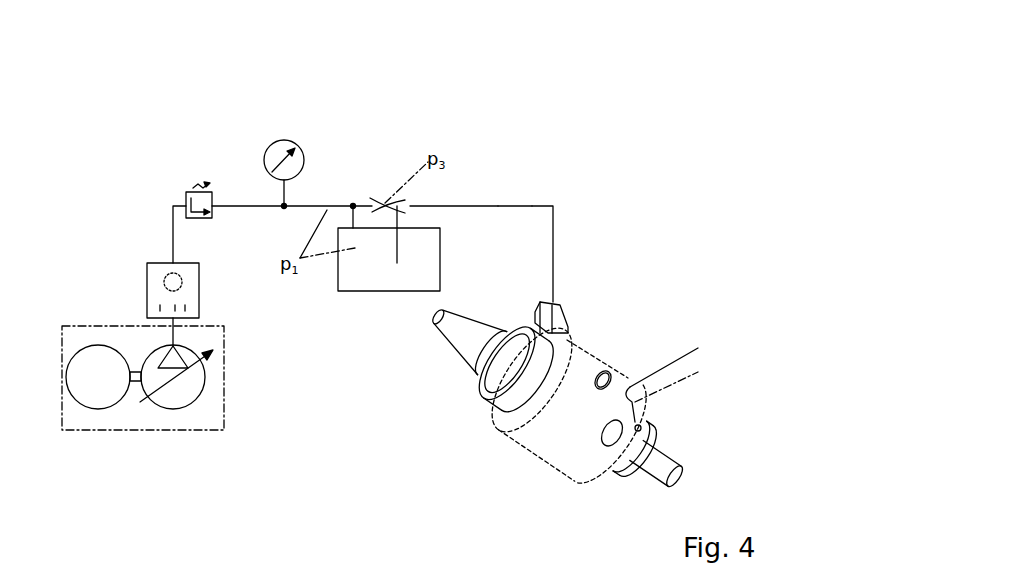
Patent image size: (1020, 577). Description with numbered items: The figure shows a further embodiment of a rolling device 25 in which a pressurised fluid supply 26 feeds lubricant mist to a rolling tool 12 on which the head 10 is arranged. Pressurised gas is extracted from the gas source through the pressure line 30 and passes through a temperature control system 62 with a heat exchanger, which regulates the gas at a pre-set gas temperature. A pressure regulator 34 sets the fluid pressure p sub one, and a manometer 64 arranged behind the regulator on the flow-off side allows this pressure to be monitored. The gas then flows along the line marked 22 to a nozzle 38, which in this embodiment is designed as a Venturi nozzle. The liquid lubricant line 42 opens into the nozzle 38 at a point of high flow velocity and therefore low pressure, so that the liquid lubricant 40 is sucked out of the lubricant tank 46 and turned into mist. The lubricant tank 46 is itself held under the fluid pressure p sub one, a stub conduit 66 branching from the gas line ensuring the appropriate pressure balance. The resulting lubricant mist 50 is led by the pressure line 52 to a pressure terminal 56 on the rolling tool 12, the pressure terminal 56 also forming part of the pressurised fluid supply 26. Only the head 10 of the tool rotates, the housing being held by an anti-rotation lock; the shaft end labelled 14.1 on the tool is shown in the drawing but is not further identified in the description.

The head 10 is at (592, 389).
The rolling tool 12 is at (543, 445).
The shaft end 14.1 is at (687, 470).
The compressed air line 22 is at (257, 210).
The rolling device 25 is at (690, 82).
The pressurised fluid supply 26 is at (535, 69).
The pressure line 30 is at (172, 242).
The pressure regulator 34 is at (197, 200).
The nozzle 38 is at (383, 202).
The liquid lubricant 40 is at (157, 430).
The liquid lubricant line 42 is at (397, 238).
The lubricant tank 46 is at (428, 228).
The lubricant mist 50 is at (498, 207).
The pressure line 52 is at (532, 207).
The pressure terminal 56 is at (563, 320).
The temperature control system 62 is at (145, 287).
The manometer 64 is at (303, 152).
The stub conduit 66 is at (357, 220).